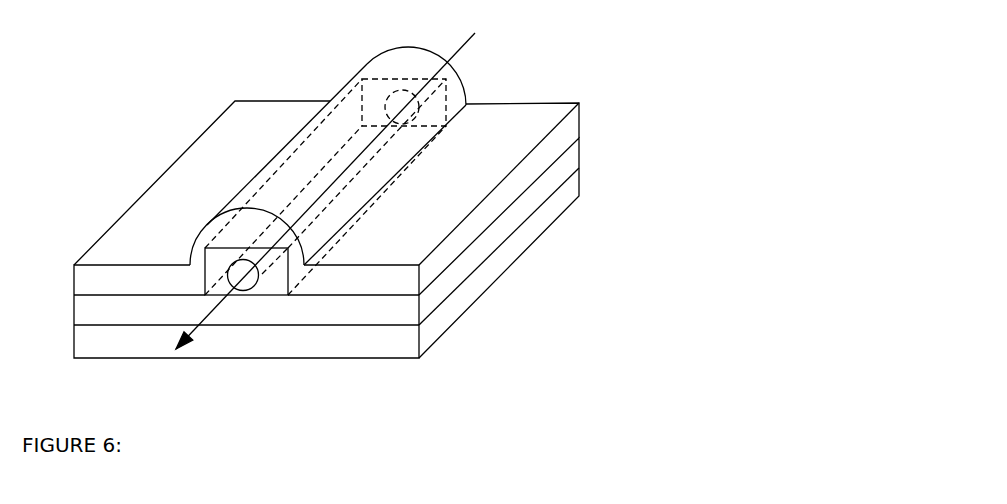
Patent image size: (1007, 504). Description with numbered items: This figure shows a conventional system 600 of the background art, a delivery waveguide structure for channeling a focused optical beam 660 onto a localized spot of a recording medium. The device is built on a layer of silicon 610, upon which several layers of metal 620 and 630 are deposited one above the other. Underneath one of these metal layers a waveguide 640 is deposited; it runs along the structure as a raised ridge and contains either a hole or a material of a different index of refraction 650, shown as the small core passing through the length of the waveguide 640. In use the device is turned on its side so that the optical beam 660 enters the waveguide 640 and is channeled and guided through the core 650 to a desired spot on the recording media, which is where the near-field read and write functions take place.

The conventional system 600 is at (372, 213).
The layer of silicon 610 is at (423, 350).
The layer of metal 620 is at (422, 312).
The layer of metal 630 is at (422, 280).
The waveguide 640 is at (188, 262).
The hole or different index of refraction material 650 is at (259, 272).
The focused optical beam 660 is at (210, 313).